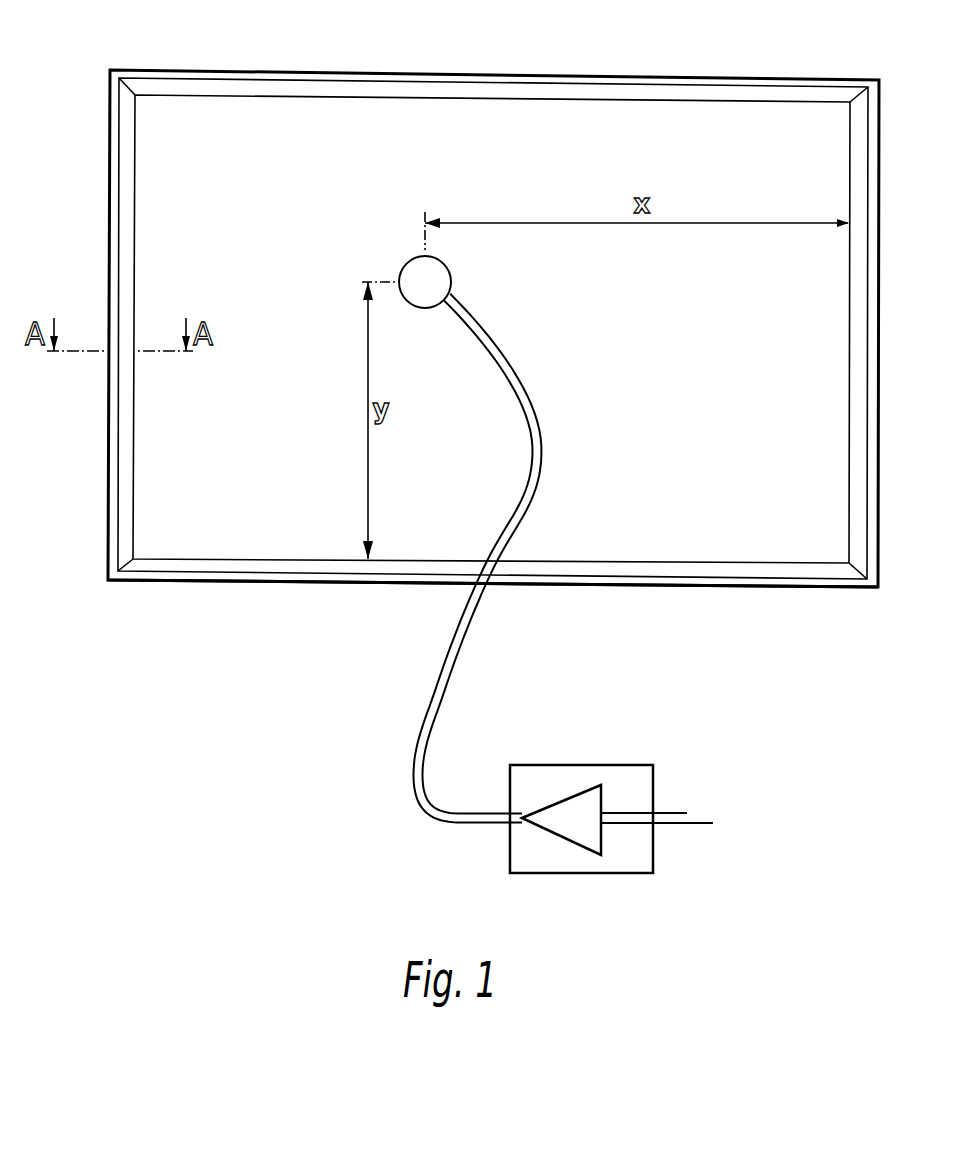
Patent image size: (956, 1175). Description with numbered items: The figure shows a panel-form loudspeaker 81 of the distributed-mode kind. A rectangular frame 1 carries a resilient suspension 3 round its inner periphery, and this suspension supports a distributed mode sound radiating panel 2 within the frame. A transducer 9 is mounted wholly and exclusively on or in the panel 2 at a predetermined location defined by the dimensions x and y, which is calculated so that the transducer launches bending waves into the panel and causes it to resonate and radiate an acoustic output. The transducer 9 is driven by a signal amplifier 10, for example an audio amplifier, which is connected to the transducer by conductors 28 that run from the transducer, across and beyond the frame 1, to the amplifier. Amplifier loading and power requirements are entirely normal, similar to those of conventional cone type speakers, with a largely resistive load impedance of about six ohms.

The panel-form loudspeaker 81 is at (457, 55).
The rectangular frame 1 is at (272, 75).
The distributed mode sound radiating panel 2 is at (663, 132).
The resilient suspension 3 is at (710, 568).
The transducer 9 is at (418, 278).
The conductors 28 is at (440, 697).
The signal amplifier 10 is at (628, 787).